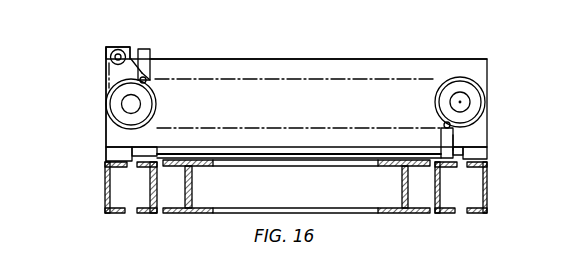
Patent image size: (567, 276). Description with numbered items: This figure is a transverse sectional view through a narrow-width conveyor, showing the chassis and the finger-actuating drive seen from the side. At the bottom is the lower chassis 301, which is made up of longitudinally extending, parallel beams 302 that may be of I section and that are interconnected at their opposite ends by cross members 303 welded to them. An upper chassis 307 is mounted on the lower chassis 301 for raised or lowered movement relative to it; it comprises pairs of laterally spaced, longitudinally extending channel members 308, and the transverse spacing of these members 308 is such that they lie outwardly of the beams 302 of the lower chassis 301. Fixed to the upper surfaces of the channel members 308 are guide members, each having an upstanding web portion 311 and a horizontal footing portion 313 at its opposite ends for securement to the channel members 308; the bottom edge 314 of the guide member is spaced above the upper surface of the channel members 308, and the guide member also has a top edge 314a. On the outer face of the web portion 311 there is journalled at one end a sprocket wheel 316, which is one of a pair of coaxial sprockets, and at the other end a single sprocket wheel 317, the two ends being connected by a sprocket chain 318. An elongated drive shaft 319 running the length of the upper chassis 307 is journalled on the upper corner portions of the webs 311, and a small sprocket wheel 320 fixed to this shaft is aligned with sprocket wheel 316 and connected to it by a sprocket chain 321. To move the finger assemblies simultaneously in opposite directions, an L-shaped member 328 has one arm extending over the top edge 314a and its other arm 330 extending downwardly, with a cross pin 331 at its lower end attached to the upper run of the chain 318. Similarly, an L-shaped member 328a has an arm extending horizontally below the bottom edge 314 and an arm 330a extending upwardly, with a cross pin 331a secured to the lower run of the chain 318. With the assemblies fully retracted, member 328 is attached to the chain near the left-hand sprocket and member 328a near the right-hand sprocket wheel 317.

The lower chassis 301 is at (187, 217).
The beam 302 is at (192, 192).
The cross member 303 is at (320, 162).
The upper chassis 307 is at (97, 188).
The channel member 308 is at (142, 213).
The web portion 311 is at (301, 109).
The footing portion 313 is at (110, 155).
The bottom edge 314 is at (280, 147).
The top edge 314a is at (263, 59).
The sprocket wheel 316 is at (113, 104).
The sprocket wheel 317 is at (470, 92).
The sprocket chain 318 is at (287, 79).
The drive shaft 319 is at (112, 55).
The small sprocket wheel 320 is at (118, 47).
The sprocket chain 321 is at (106, 70).
The L-shaped member 328 is at (151, 46).
The L-shaped member 328a is at (437, 138).
The arm 330 is at (144, 68).
The arm 330a is at (452, 138).
The cross pin 331 is at (150, 72).
The cross pin 331a is at (445, 124).